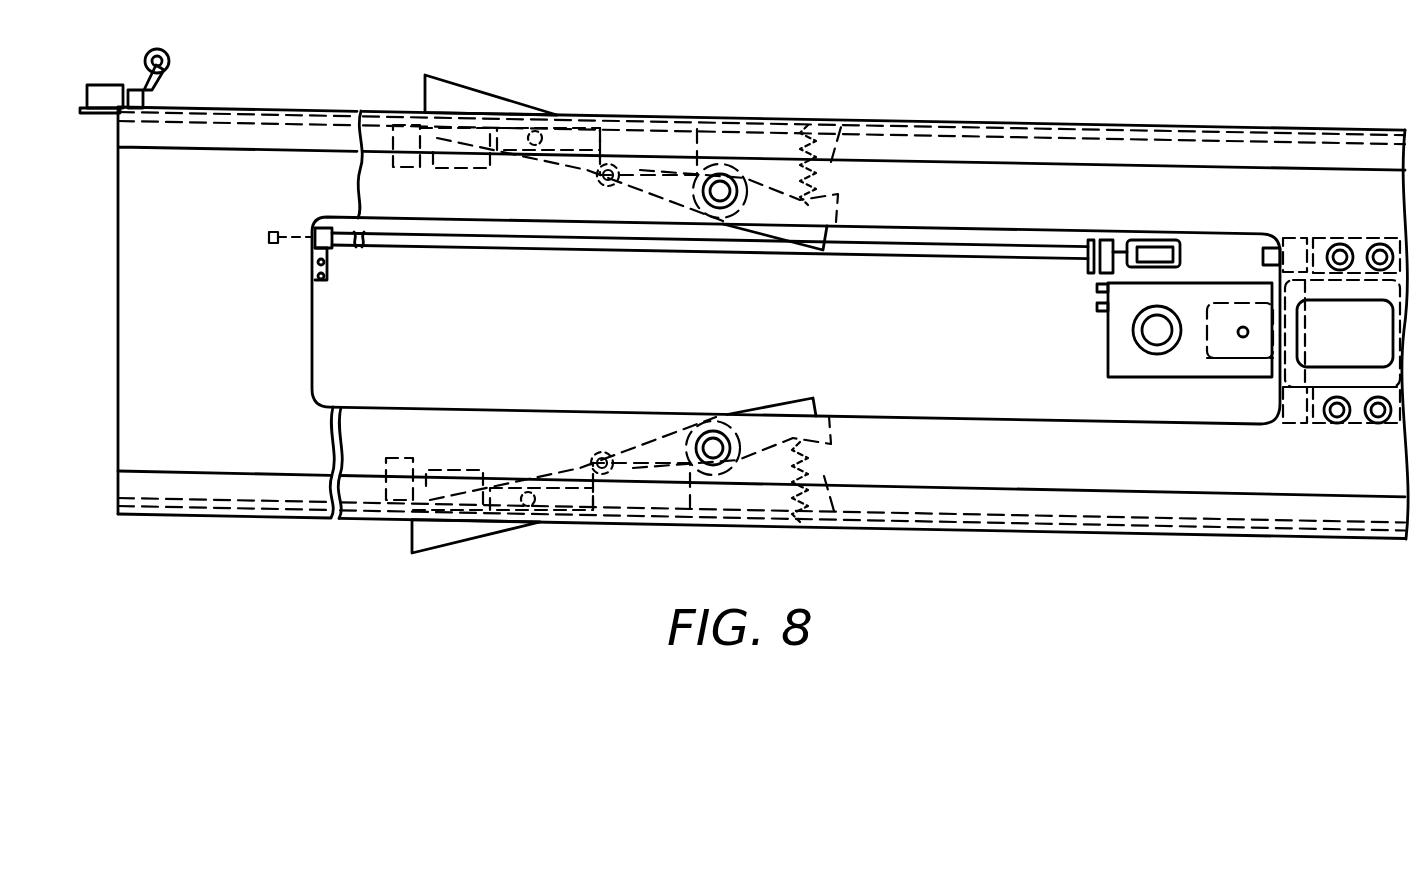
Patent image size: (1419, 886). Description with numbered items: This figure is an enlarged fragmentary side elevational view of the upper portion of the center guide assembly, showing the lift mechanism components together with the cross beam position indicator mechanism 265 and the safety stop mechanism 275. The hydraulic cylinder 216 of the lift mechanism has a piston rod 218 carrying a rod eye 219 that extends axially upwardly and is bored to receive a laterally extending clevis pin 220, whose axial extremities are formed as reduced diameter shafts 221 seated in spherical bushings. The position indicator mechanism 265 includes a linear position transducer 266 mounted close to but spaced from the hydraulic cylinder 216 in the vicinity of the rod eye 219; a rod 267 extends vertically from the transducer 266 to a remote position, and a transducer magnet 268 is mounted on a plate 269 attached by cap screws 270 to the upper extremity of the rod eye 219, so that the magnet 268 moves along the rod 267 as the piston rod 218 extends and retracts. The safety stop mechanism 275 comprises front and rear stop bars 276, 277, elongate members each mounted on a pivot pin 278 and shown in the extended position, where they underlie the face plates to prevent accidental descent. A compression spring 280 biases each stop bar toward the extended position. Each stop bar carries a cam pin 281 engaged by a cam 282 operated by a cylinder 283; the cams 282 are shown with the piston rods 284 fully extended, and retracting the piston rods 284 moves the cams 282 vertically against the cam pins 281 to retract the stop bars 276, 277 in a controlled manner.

The hydraulic cylinder 216 is at (1361, 248).
The piston rod 218 is at (1236, 360).
The rod eye 219 is at (1120, 348).
The clevis pin 220 is at (1147, 350).
The shafts 221 is at (1163, 335).
The cross beam position indicator mechanism 265 is at (1152, 222).
The linear position transducer 266 is at (1170, 250).
The rod 267 is at (933, 247).
The transducer magnet 268 is at (1107, 240).
The plate 269 is at (1098, 287).
The cap screws 270 is at (1098, 307).
The safety stop mechanism 275 is at (548, 108).
The stop bar 276 is at (467, 92).
The stop bar 277 is at (462, 533).
The pivot pin 278 is at (722, 188).
The compression spring 280 is at (833, 150).
The cam pin 281 is at (617, 160).
The cam 282 is at (636, 155).
The cylinder 283 is at (423, 112).
The piston rod 284 is at (545, 130).